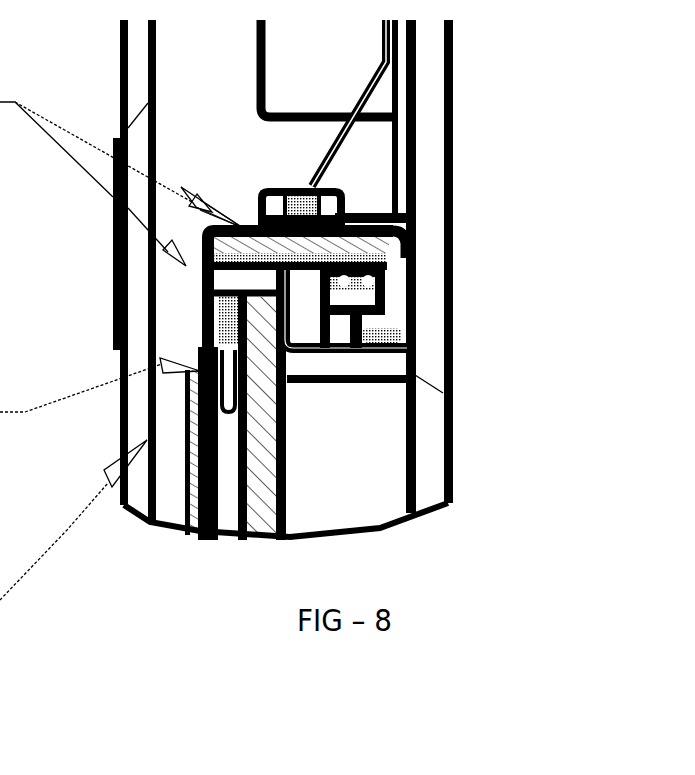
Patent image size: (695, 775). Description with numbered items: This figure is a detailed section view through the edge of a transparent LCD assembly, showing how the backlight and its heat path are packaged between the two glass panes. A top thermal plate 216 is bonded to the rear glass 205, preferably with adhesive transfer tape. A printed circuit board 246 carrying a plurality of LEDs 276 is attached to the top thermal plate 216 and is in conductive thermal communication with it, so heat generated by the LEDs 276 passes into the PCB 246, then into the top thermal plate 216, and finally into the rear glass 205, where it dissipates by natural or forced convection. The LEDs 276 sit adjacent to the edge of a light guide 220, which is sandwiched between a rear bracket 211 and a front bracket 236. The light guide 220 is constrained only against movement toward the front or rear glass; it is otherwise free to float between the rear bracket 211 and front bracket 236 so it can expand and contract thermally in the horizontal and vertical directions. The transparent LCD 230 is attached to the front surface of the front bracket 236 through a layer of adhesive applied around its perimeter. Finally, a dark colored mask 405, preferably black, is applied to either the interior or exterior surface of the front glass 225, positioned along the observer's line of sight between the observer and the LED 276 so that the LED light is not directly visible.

The rear glass 205 is at (430, 477).
The rear bracket 211 is at (330, 363).
The top thermal plate 216 is at (400, 118).
The light guide 220 is at (260, 502).
The front glass 225 is at (135, 304).
The transparent LCD 230 is at (185, 470).
The front bracket 236 is at (185, 417).
The printed circuit board 246 is at (383, 277).
The LED 276 is at (398, 214).
The dark colored mask 405 is at (113, 235).